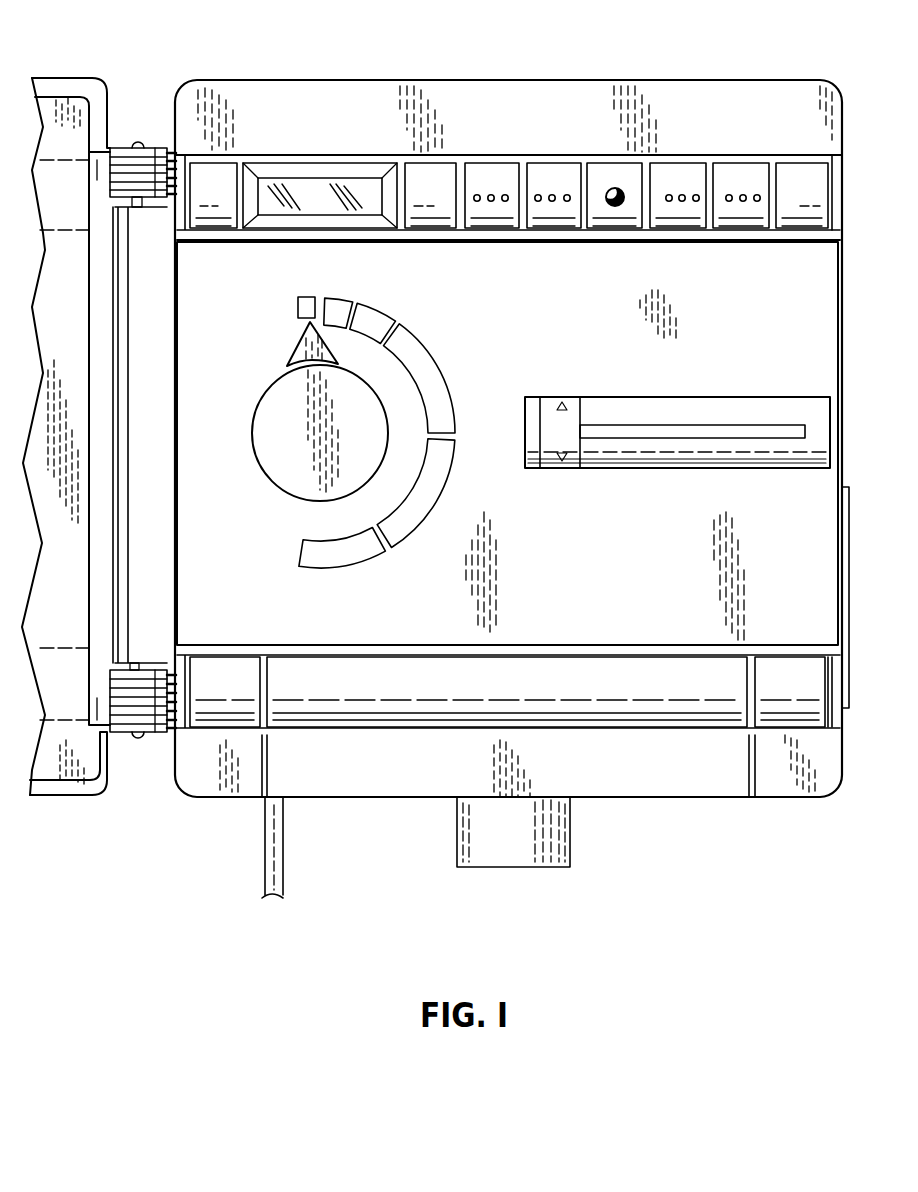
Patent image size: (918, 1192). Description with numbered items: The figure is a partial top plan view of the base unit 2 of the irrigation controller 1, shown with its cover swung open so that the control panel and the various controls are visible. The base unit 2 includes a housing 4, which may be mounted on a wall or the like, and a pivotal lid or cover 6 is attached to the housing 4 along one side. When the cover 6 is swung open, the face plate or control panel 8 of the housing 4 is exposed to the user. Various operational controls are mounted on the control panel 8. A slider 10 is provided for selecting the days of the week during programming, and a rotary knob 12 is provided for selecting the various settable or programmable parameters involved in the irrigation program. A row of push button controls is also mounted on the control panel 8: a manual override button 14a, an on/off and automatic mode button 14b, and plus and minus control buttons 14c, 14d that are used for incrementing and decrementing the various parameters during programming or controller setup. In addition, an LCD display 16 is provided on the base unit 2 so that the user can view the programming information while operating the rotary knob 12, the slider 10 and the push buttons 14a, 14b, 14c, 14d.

The irrigation controller 1 is at (488, 449).
The base unit 2 is at (512, 468).
The housing 4 is at (375, 98).
The cover 6 is at (57, 113).
The control panel 8 is at (577, 586).
The slider 10 is at (567, 430).
The rotary knob 12 is at (272, 447).
The manual override button 14a is at (684, 177).
The on/off and automatic mode button 14b is at (746, 177).
The plus control button 14c is at (497, 177).
The minus control button 14d is at (560, 177).
The LCD display 16 is at (322, 190).